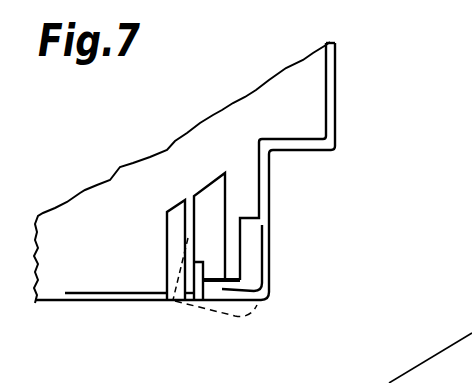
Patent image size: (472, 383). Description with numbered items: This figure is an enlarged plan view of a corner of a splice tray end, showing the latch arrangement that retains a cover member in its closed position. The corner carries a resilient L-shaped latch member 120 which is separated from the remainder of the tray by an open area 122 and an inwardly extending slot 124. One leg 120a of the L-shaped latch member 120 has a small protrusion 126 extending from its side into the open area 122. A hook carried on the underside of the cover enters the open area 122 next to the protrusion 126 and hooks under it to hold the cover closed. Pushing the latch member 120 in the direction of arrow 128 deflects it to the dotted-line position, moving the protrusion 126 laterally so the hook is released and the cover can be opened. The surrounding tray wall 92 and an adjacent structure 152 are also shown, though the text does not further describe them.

The wall 92 is at (336, 85).
The L-shaped latch member 120 is at (235, 314).
The leg of the L-shaped latch 120a is at (188, 249).
The open area 122 is at (257, 305).
The inwardly extending slot 124 is at (171, 218).
The protrusion 126 is at (269, 287).
The arrow 128 is at (272, 261).
The panel 152 is at (370, 358).